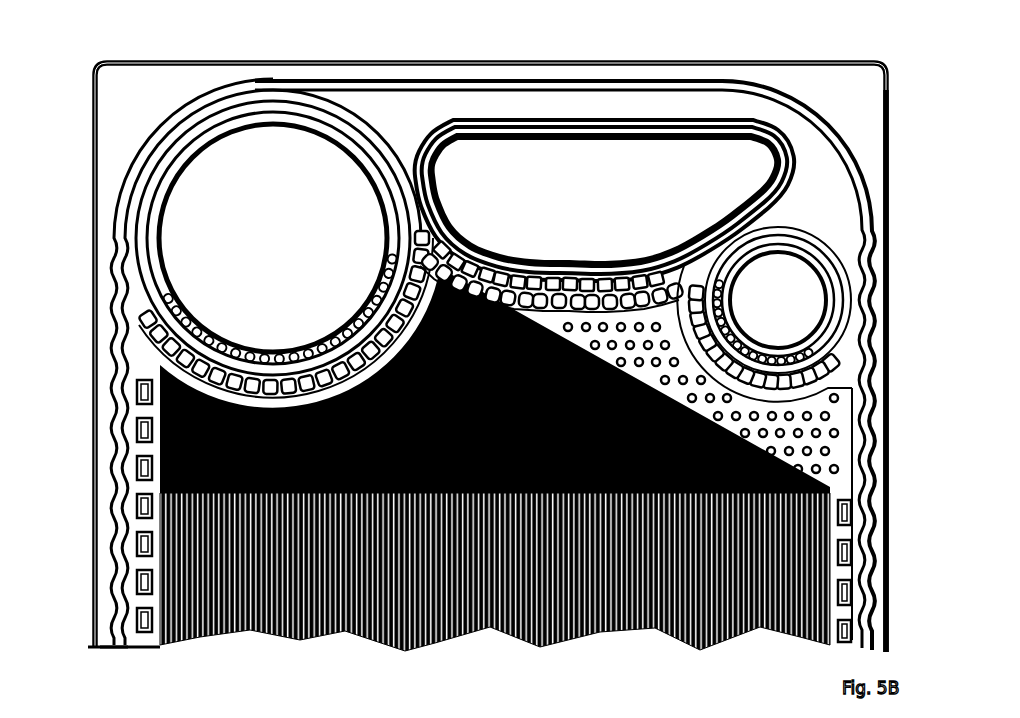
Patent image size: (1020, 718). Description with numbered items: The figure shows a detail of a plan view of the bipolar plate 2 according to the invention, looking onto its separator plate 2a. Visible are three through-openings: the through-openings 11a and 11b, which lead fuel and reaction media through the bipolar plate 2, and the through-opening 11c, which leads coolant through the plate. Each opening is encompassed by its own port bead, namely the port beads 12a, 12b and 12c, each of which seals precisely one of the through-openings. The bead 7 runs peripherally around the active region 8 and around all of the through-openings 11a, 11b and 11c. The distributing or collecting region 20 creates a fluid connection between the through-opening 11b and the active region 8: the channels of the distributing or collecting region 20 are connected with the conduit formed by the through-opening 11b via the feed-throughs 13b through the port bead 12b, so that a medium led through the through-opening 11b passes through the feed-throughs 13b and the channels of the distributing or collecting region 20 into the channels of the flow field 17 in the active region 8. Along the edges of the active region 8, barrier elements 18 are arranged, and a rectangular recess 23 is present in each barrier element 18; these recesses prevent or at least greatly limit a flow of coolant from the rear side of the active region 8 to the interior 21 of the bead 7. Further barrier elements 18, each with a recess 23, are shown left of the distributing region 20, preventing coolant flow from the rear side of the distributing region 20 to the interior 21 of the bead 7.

The bipolar plate 2 is at (802, 62).
The separator plate 2a is at (887, 128).
The bead 7 is at (350, 86).
The active region 8 is at (40, 582).
The through-opening 11a is at (260, 260).
The through-opening 11b is at (749, 310).
The through-opening 11c is at (554, 198).
The port bead 12a is at (244, 117).
The port bead 12b is at (842, 300).
The port bead 12c is at (571, 119).
The feed-throughs 13b is at (280, 339).
The flow field 17 is at (343, 652).
The barrier elements 18 is at (137, 512).
The distributing or collecting region 20 is at (44, 665).
The interior of the bead 21 is at (113, 652).
The recess 23 is at (137, 408).